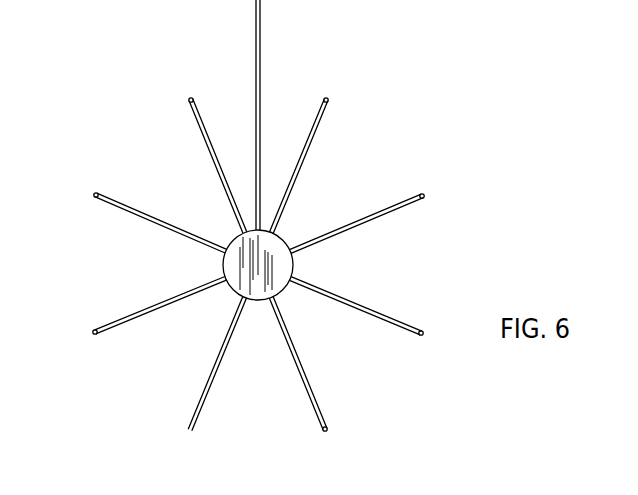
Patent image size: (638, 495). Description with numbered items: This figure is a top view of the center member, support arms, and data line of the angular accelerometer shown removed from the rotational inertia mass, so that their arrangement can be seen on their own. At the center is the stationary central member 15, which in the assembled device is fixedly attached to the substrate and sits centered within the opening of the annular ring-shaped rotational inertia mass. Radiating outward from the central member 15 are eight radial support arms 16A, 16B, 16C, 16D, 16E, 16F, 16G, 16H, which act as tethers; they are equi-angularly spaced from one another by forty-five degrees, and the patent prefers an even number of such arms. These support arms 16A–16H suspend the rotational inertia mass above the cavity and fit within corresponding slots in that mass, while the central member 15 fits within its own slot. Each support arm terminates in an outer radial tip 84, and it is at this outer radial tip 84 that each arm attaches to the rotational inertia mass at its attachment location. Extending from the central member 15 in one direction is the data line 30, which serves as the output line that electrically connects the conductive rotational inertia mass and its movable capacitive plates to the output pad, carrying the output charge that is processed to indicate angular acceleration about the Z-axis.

The central member 15 is at (288, 258).
The output line 30 is at (261, 16).
The radial support arm 16A is at (203, 122).
The radial support arm 16B is at (321, 124).
The radial support arm 16C is at (395, 207).
The radial support arm 16D is at (394, 327).
The radial support arm 16E is at (310, 408).
The radial support arm 16F is at (202, 404).
The radial support arm 16G is at (117, 318).
The radial support arm 16H is at (116, 200).
The outer radial tip 84 is at (190, 97).